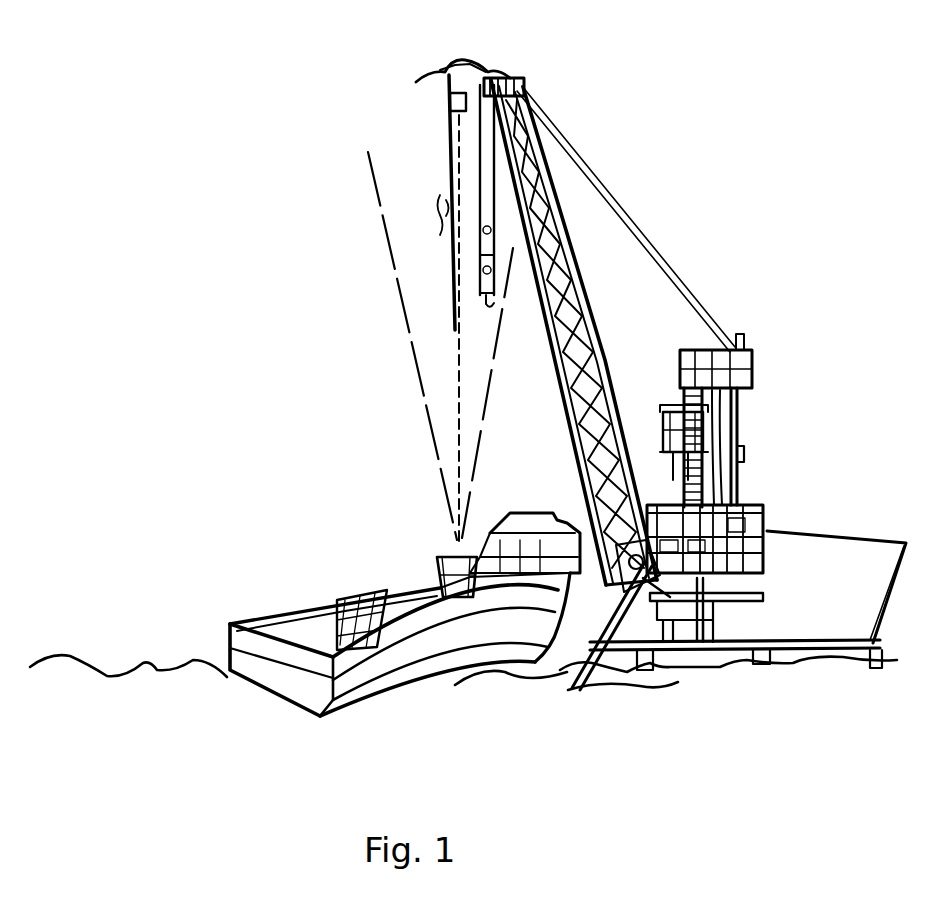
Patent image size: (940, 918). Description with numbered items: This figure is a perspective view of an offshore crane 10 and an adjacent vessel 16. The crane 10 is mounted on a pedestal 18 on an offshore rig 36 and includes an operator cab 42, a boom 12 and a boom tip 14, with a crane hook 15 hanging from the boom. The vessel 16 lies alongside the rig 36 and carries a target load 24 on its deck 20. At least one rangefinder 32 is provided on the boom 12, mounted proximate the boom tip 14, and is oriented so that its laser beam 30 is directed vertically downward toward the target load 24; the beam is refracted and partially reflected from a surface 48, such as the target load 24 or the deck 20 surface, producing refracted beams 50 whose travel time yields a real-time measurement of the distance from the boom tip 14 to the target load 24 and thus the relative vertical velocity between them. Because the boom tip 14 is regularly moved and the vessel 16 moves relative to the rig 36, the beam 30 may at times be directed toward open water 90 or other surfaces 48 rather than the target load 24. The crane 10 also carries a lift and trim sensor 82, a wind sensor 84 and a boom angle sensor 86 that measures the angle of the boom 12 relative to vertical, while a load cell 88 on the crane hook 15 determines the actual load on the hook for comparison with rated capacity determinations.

The offshore crane 10 is at (741, 415).
The boom 12 is at (578, 250).
The boom tip 14 is at (485, 72).
The crane hook 15 is at (485, 297).
The vessel 16 is at (243, 623).
The pedestal 18 is at (700, 657).
The deck 20 is at (417, 613).
The target load 24 is at (437, 578).
The beam 30 is at (460, 313).
The rangefinder 32 is at (450, 100).
The offshore rig 36 is at (863, 537).
The operator cab 42 is at (661, 497).
The surface 48 is at (327, 643).
The refracted beam 50 is at (445, 143).
The lift and trim sensor 82 is at (746, 455).
The wind sensor 84 is at (744, 340).
The boom angle sensor 86 is at (614, 570).
The load cell 88 is at (487, 249).
The open water 90 is at (550, 708).